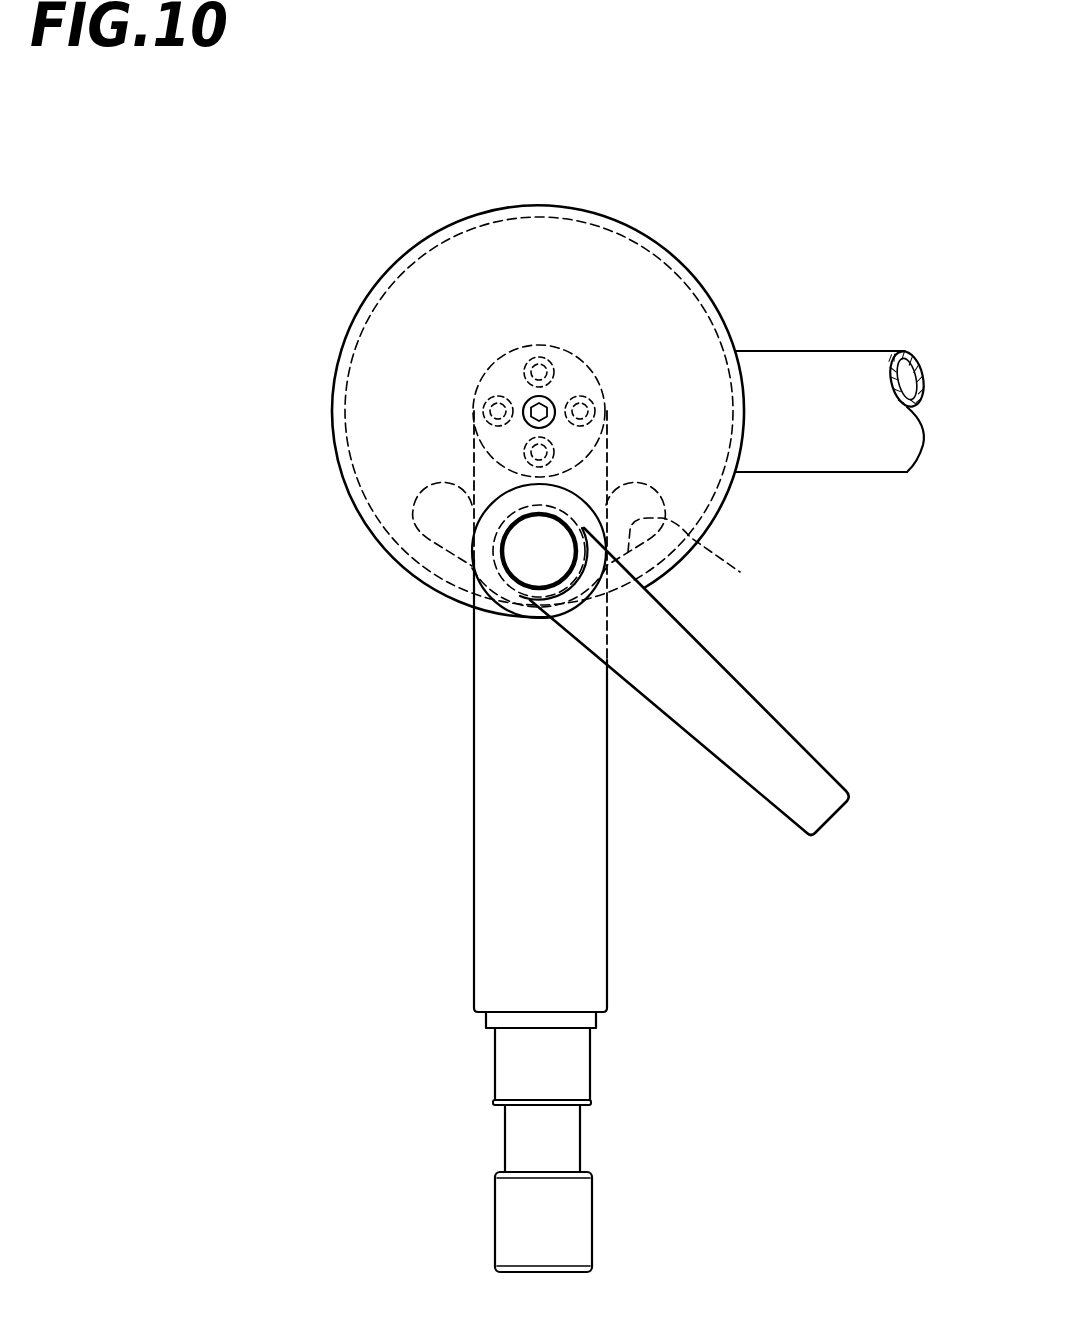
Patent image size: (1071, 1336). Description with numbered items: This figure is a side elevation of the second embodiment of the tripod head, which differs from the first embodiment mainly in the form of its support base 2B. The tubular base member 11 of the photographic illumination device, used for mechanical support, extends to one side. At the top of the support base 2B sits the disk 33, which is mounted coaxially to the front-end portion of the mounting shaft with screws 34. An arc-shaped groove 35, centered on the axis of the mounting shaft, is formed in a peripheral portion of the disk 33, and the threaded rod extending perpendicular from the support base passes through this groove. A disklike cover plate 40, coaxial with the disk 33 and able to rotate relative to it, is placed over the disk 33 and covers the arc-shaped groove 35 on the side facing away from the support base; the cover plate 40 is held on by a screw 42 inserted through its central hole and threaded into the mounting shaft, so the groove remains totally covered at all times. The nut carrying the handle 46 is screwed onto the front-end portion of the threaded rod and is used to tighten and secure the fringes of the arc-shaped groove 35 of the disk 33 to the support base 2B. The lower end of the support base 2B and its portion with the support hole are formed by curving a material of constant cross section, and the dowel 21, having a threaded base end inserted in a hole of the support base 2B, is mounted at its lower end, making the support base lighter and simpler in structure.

The base member 11 is at (845, 367).
The support base 2B is at (446, 918).
The dowel 21 is at (557, 1218).
The disk 33 is at (653, 240).
The screws 34 is at (536, 358).
The arc-shaped groove 35 is at (595, 550).
The cover plate 40 is at (407, 305).
The screw 42 is at (528, 402).
The handle 46 is at (780, 745).